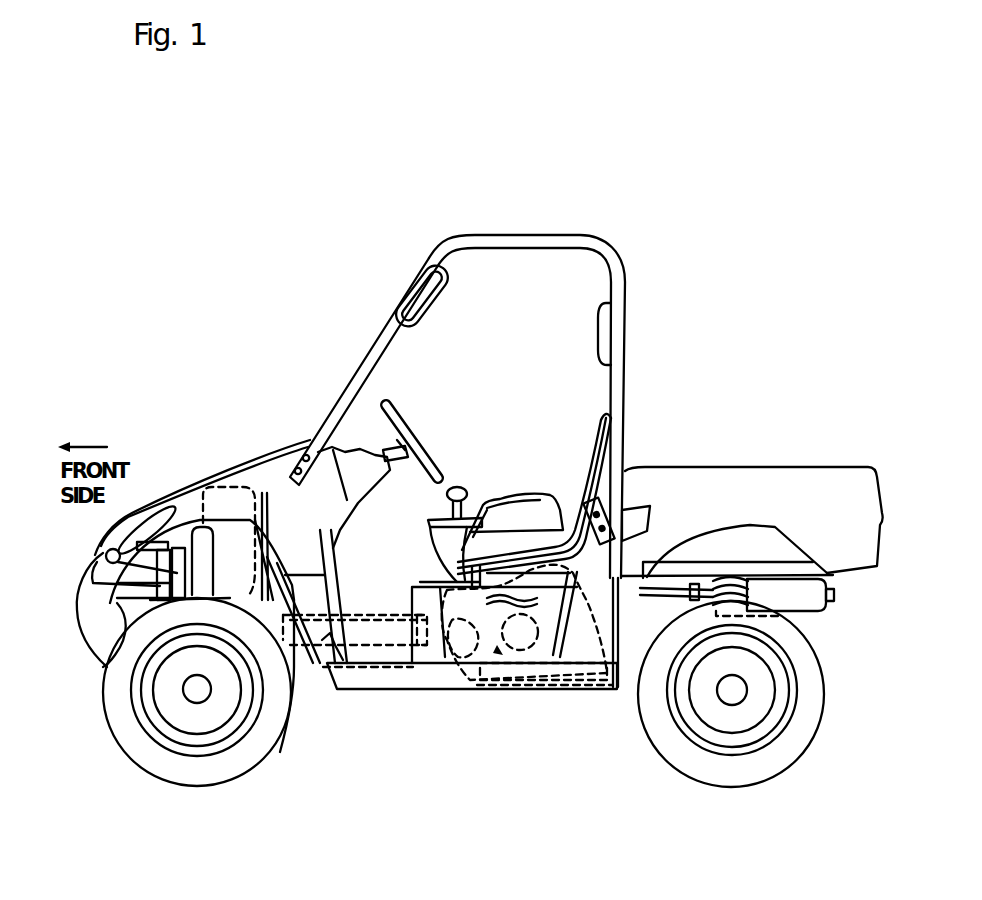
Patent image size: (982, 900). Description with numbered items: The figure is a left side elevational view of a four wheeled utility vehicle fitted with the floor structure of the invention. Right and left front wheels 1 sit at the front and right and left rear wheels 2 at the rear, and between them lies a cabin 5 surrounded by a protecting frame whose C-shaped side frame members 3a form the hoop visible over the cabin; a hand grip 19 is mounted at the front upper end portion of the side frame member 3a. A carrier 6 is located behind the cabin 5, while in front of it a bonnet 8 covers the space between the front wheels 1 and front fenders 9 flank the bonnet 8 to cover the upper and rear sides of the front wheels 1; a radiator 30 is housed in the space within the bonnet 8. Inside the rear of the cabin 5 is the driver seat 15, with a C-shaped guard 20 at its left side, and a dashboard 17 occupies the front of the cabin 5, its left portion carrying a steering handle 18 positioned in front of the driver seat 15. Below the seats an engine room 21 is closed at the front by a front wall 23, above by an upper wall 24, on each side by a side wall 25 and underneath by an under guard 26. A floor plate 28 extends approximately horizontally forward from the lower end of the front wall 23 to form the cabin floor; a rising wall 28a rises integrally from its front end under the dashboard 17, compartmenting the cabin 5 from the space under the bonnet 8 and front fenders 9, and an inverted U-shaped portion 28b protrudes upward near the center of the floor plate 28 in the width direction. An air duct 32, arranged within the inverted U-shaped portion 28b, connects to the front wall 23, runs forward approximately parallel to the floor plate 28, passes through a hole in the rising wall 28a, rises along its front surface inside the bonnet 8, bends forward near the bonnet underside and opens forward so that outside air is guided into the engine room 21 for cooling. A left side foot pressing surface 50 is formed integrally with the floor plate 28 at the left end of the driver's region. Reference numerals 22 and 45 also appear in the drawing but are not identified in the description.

The front wheels 1 is at (132, 759).
The rear wheels 2 is at (810, 744).
The side frame member 3a is at (373, 352).
The cabin 5 is at (492, 390).
The carrier 6 is at (769, 467).
The bonnet 8 is at (237, 462).
The front fenders 9 is at (188, 510).
The driver seat 15 is at (556, 497).
The dashboard 17 is at (349, 452).
The steering handle 18 is at (415, 432).
The hand grip 19 is at (420, 292).
The C-shaped guard 20 is at (481, 690).
The engine room 21 is at (513, 690).
The bracket 22 is at (603, 329).
The front wall 23 is at (415, 602).
The upper wall 24 is at (418, 574).
The side wall 25 is at (587, 596).
The under guard 26 is at (554, 690).
The floor plate 28 is at (383, 667).
The rising wall 28a is at (332, 691).
The inverted U-shaped portion 28b is at (347, 614).
The radiator 30 is at (105, 565).
The air duct 32 is at (281, 745).
The seat cushion 45 is at (503, 500).
The left side foot pressing surface 50 is at (347, 692).